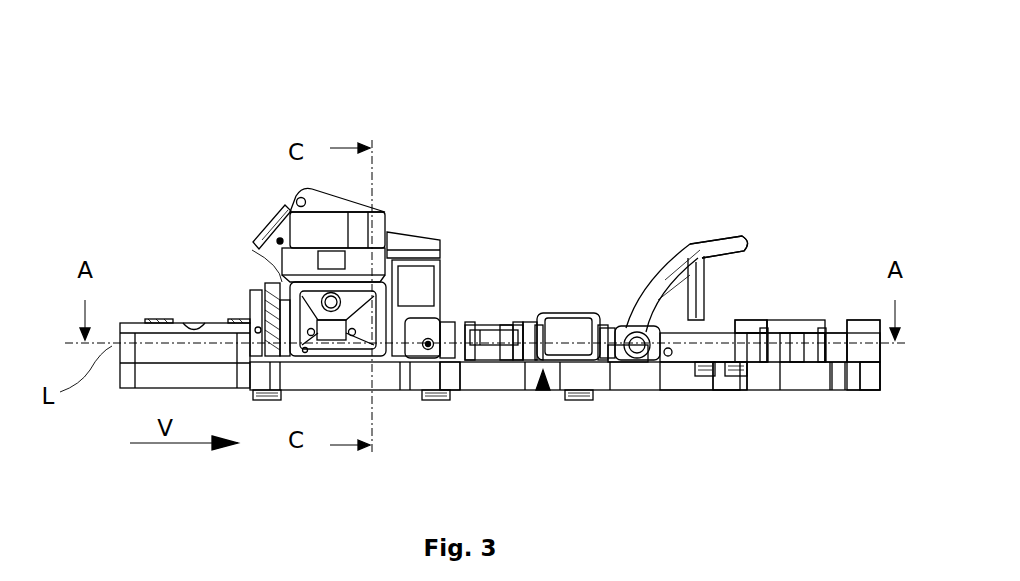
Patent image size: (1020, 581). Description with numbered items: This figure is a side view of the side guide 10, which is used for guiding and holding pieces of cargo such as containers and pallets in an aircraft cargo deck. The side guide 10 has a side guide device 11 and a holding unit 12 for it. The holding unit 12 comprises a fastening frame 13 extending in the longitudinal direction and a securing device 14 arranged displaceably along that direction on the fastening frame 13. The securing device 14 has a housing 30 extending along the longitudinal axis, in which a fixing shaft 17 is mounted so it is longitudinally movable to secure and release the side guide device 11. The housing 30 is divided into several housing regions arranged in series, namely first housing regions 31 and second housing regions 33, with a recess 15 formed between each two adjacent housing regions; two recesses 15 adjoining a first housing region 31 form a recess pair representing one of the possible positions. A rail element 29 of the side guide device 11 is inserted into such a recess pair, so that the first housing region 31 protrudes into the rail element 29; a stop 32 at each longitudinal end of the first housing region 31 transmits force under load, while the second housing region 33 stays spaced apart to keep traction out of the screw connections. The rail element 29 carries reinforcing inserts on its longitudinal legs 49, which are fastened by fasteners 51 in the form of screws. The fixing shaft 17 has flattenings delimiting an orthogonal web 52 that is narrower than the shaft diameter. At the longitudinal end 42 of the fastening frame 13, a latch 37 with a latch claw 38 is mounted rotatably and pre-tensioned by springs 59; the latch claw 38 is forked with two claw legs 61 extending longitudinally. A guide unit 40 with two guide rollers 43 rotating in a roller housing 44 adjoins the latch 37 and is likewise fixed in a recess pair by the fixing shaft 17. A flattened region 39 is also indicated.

The side guide 10 is at (122, 72).
The side guide device 11 is at (256, 100).
The holding unit 12 is at (135, 208).
The fastening frame 13 is at (135, 388).
The securing device 14 is at (842, 330).
The recesses 15 is at (465, 320).
The fixing shaft 17 is at (843, 395).
The rail element 29 is at (252, 250).
The housing 30 is at (478, 392).
The first housing region 31 is at (328, 392).
The stop 32 is at (506, 320).
The second housing region 33 is at (452, 395).
The latch 37 is at (645, 320).
The latch claw 38 is at (690, 258).
The flattened region 39 is at (742, 320).
The guide unit 40 is at (543, 395).
The longitudinal end 42 is at (870, 320).
The guide roller 43 is at (602, 395).
The roller housing 44 is at (572, 395).
The longitudinal leg of the rail element 49 is at (410, 232).
The fastener 51 is at (270, 285).
The orthogonal web 52 is at (860, 342).
The springs 59 is at (628, 362).
The claw legs 61 is at (718, 238).